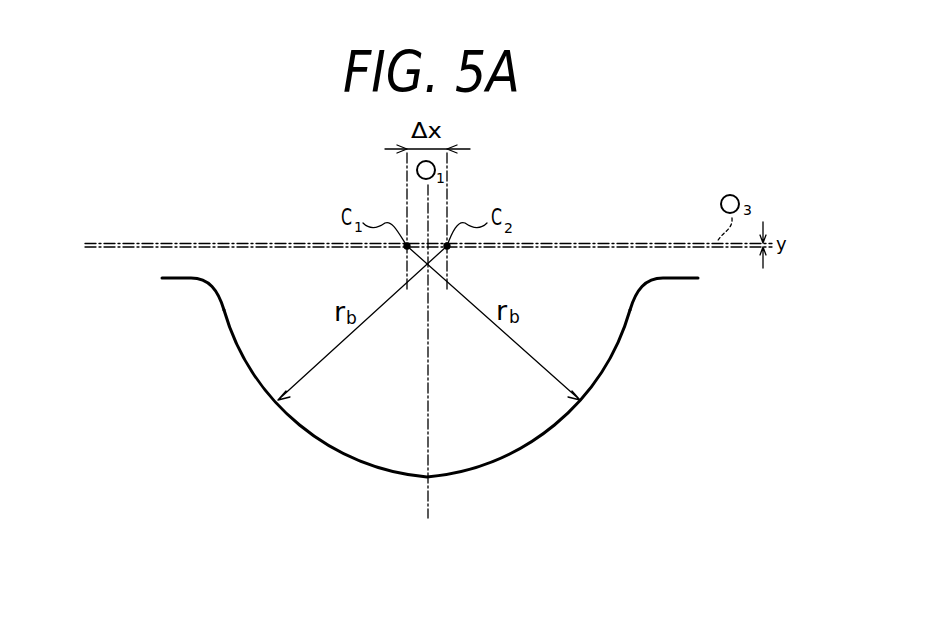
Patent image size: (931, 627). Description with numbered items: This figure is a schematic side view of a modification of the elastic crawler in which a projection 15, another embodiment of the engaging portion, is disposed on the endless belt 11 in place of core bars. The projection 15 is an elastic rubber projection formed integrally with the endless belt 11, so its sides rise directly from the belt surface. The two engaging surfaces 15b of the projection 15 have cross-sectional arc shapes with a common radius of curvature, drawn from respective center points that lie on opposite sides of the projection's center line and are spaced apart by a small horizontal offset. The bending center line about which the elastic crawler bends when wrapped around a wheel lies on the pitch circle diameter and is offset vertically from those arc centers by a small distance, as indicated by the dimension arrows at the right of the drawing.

The endless belt 11 is at (197, 260).
The projection 15 is at (430, 393).
The engaging surface 15b is at (270, 392).